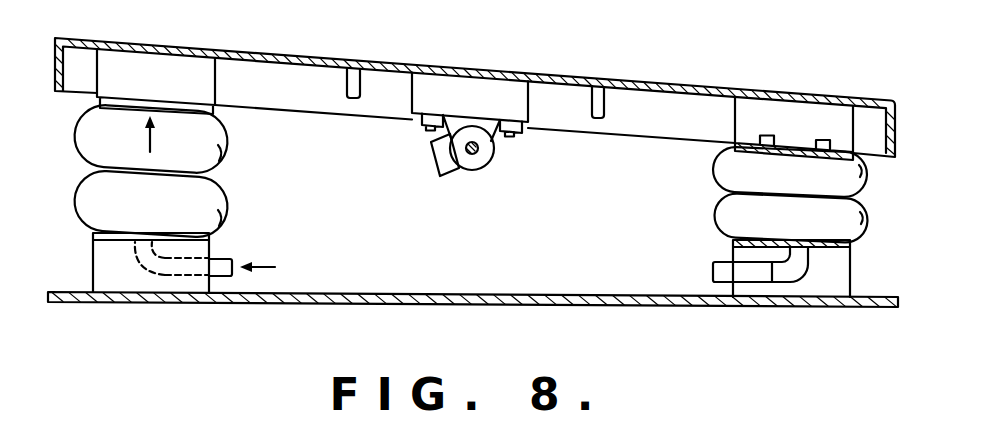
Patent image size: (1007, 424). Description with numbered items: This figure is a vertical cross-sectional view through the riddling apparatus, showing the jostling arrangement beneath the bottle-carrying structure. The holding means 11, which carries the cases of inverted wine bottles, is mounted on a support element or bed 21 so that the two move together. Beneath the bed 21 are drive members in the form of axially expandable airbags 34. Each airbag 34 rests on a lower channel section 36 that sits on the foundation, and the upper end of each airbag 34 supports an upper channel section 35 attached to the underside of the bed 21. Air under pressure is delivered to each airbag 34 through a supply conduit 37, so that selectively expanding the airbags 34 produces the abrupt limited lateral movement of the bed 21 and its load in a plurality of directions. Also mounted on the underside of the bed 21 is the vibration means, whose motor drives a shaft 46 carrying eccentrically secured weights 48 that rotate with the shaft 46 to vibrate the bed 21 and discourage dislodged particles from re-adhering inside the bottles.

The holding means 11 is at (680, 78).
The support element or bed 21 is at (307, 60).
The drive members (airbags) 34 is at (217, 190).
The channel sections 35 is at (163, 62).
The channel sections 36 is at (92, 265).
The supply conduits 37 is at (232, 258).
The shaft 46 is at (477, 152).
The weights 48 is at (455, 175).